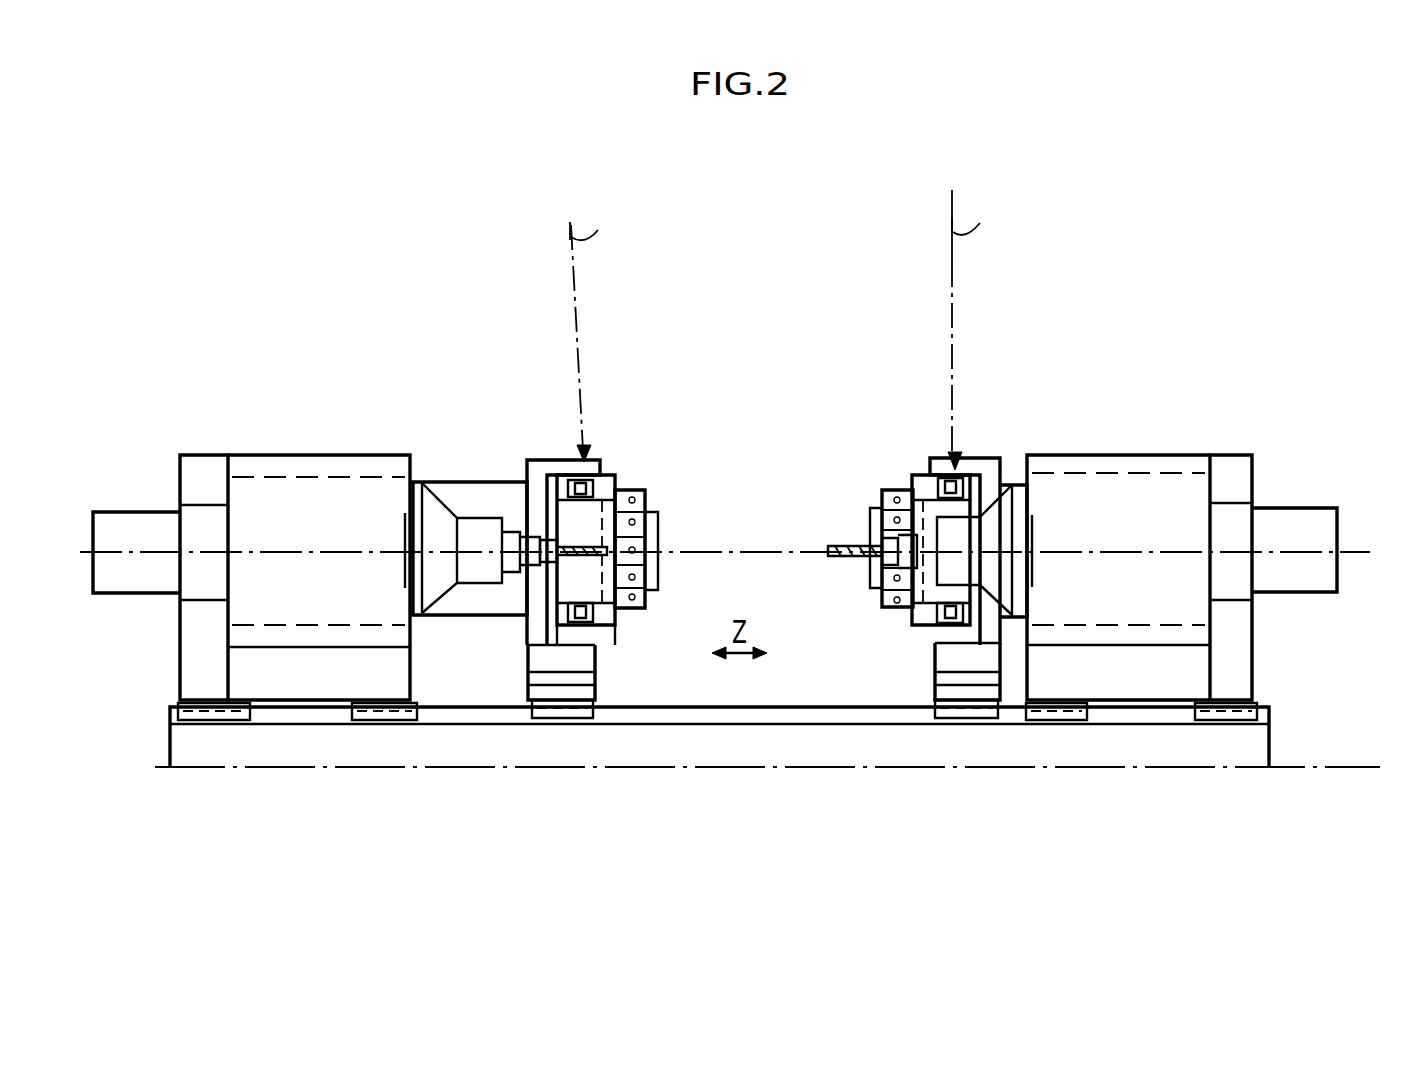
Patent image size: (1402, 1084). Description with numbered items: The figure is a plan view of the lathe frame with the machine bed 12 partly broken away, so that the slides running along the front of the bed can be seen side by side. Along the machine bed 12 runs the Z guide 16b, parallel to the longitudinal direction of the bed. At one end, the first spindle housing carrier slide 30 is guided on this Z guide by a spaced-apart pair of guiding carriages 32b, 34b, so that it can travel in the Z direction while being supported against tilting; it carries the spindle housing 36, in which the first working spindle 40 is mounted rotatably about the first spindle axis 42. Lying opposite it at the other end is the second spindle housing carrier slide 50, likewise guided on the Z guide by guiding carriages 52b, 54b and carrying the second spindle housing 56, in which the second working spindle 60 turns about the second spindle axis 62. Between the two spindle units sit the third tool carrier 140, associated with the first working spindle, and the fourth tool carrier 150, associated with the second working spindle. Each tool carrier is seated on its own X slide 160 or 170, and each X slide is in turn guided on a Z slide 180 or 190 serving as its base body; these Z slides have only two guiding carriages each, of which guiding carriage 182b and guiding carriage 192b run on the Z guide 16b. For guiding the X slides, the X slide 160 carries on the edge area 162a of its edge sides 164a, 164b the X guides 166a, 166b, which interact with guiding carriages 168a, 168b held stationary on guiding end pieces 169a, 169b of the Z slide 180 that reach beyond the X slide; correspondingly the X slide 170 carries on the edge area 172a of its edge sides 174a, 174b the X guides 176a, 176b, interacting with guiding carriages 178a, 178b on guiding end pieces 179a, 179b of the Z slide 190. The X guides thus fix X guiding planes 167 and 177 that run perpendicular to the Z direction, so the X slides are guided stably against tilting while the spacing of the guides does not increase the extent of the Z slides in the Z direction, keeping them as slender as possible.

The machine bed 12 is at (1208, 743).
The Z guide 16b is at (716, 720).
The first spindle housing carrier slide 30 is at (1138, 682).
The guiding carriage 32b is at (1053, 722).
The guiding carriage 34b is at (1232, 722).
The spindle housing 36 is at (1186, 588).
The first working spindle 40 is at (1027, 478).
The first spindle axis 42 is at (1143, 550).
The second spindle housing carrier slide 50 is at (309, 670).
The guiding carriage 52b is at (378, 722).
The guiding carriage 54b is at (200, 722).
The second spindle housing 56 is at (274, 590).
The second working spindle 60 is at (473, 497).
The second spindle axis 62 is at (343, 552).
The third tool carrier 140 is at (853, 509).
The fourth tool carrier 150 is at (668, 520).
The X slide 160 is at (880, 490).
The edge area 162a is at (1003, 480).
The edge side 164a is at (913, 473).
The edge side 164b is at (915, 615).
The X guide 166a is at (940, 476).
The X guide 166b is at (935, 625).
The X guiding plane 167 is at (978, 328).
The guiding carriage 168a is at (930, 467).
The guiding carriage 168b is at (935, 645).
The guiding end piece 169a is at (980, 467).
The guiding end piece 169b is at (968, 640).
The X slide 170 is at (610, 500).
The edge area 172a is at (603, 472).
The edge side 174a is at (603, 472).
The edge side 174b is at (625, 622).
The X guide 176a is at (535, 462).
The X guide 176b is at (530, 657).
The X guiding plane 177 is at (594, 327).
The guiding carriage 178a is at (575, 478).
The guiding carriage 178b is at (592, 625).
The guiding end piece 179a is at (607, 467).
The guiding end piece 179b is at (577, 630).
The Z slide 180 is at (960, 468).
The guiding carriage 182b is at (950, 720).
The Z slide 190 is at (588, 467).
The guiding carriage 192b is at (537, 722).